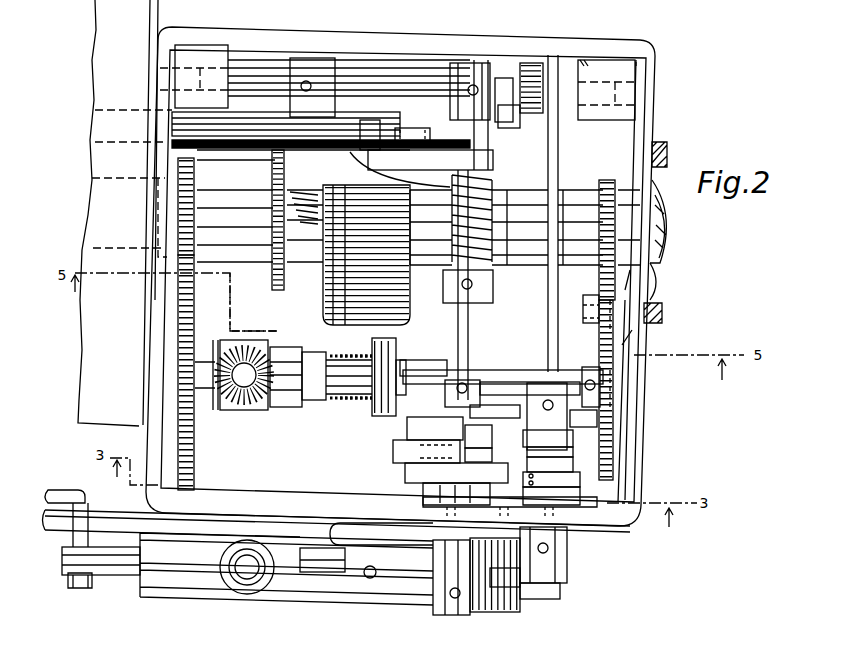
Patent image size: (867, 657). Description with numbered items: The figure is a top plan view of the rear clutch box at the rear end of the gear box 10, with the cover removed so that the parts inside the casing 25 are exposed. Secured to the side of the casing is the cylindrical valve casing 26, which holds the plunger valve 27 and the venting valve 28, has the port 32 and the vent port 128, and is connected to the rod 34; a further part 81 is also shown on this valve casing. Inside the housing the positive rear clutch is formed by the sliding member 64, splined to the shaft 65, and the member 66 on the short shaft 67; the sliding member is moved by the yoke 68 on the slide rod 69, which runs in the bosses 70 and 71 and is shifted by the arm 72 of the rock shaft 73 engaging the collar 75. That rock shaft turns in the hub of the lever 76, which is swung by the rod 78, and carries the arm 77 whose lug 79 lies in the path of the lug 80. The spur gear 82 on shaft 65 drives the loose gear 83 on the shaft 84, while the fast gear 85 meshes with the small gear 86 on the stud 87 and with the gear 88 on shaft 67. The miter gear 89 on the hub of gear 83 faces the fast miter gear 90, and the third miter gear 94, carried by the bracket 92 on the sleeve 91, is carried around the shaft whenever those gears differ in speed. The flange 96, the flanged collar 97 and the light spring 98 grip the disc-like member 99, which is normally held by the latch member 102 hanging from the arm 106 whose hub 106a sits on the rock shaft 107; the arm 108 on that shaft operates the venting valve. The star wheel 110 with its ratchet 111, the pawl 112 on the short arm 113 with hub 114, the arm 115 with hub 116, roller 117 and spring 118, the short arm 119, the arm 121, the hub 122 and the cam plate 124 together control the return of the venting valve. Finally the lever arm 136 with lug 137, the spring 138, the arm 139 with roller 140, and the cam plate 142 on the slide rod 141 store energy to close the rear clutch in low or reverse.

The selective speed transmission unit 10 is at (95, 331).
The casing 25 is at (635, 349).
The cylindrical valve casing 26 is at (178, 586).
The valve 27 is at (107, 576).
The venting valve 28 is at (491, 598).
The port 32 is at (247, 570).
The rod 34 is at (65, 495).
The sliding clutch member 64 is at (272, 258).
The shaft 65 is at (245, 198).
The clutch member 66 is at (405, 296).
The short shaft 67 is at (666, 235).
The yoke 68 is at (300, 228).
The slide rod 69 is at (362, 83).
The boss 70 is at (201, 56).
The boss 71 is at (618, 74).
The arm 72 is at (500, 88).
The rock shaft 73 is at (446, 609).
The collar 75 is at (536, 112).
The lever 76 is at (355, 556).
The arm 77 is at (431, 606).
The rod 78 is at (108, 514).
The lug 79 is at (445, 551).
The lug 80 is at (481, 556).
The block 81 is at (315, 562).
The spur gear 82 is at (200, 206).
The spur gear 83 is at (193, 445).
The shaft 84 is at (498, 372).
The spur gear 85 is at (621, 428).
The small spur gear 86 is at (647, 283).
The stud 87 is at (590, 310).
The spur gear 88 is at (610, 180).
The miter gear 89 is at (215, 350).
The miter gear 90 is at (278, 345).
The sleeve 91 is at (326, 352).
The bracket 92 is at (290, 380).
The third miter gear 94 is at (245, 378).
The flange 96 is at (396, 350).
The flanged collar 97 is at (366, 356).
The light spring 98 is at (331, 382).
The disc-like member 99 is at (378, 404).
The latch member 102 is at (404, 366).
The arm 106 is at (510, 378).
The hub 106a is at (583, 370).
The rock shaft 107 is at (562, 594).
The arm 108 is at (562, 569).
The five-pointed star wheel 110 is at (410, 477).
The five-point ratchet 111 is at (488, 453).
The pawl 112 is at (393, 449).
The short arm 113 is at (407, 430).
The hub 114 is at (488, 441).
The arm 115 is at (566, 470).
The hub 116 is at (569, 453).
The roller 117 is at (518, 490).
The spring 118 is at (566, 486).
The short arm 119 is at (566, 441).
The arm 121 is at (572, 437).
The hub 122 is at (448, 373).
The cam plate 124 is at (505, 397).
The vent port 128 is at (368, 578).
The lever arm 136 is at (504, 112).
The lug 137 is at (510, 83).
The spring 138 is at (455, 205).
The lever arm 139 is at (470, 163).
The roller 140 is at (368, 128).
The slide rod 141 is at (240, 128).
The cam plate 142 is at (405, 134).